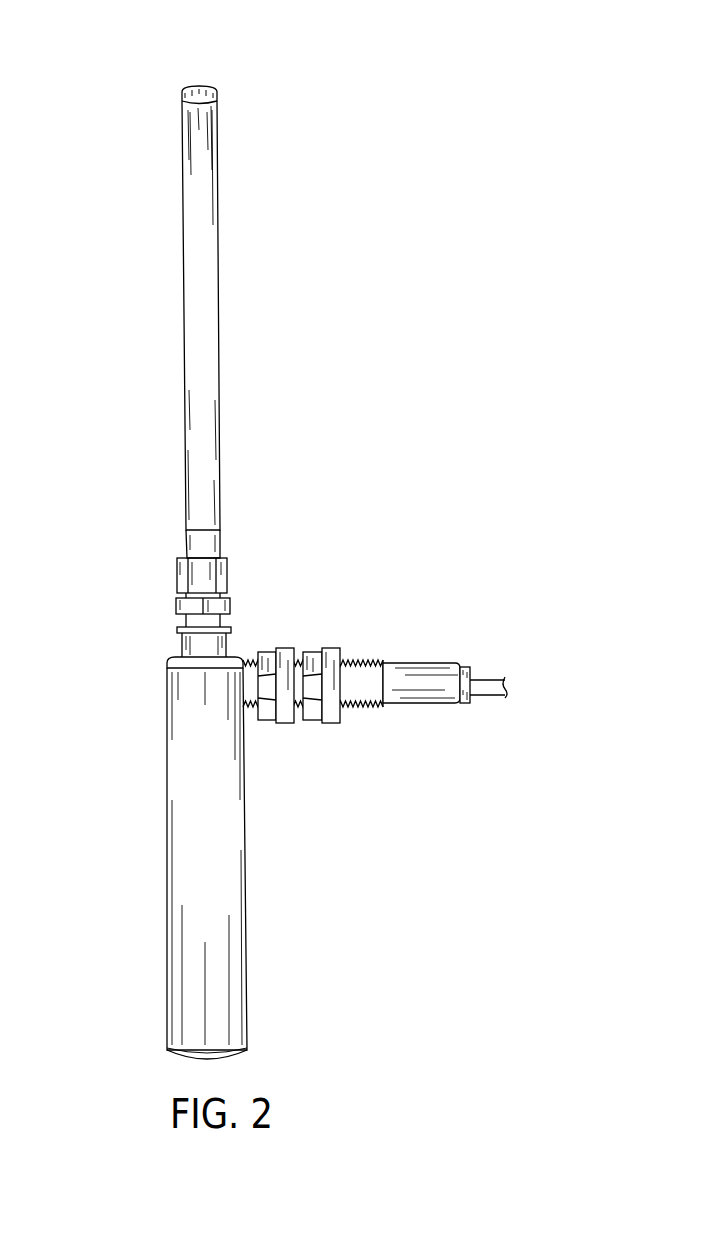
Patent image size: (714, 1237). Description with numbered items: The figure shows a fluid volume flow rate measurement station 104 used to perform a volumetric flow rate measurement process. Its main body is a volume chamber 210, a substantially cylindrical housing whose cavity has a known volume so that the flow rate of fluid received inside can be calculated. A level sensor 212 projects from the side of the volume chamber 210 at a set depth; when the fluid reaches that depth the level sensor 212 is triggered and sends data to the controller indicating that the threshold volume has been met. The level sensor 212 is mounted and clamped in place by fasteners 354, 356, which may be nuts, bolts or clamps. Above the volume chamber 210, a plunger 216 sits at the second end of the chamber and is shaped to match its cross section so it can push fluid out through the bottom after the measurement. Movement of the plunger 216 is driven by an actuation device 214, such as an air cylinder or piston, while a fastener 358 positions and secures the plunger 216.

The fluid volume flow rate measurement station 104 is at (108, 58).
The actuation device 214 is at (219, 369).
The plunger 216 is at (181, 648).
The fastener 358 is at (241, 608).
The volume chamber 210 is at (167, 925).
The level sensor 212 is at (418, 663).
The fastener 356 is at (271, 732).
The fastener 354 is at (334, 732).